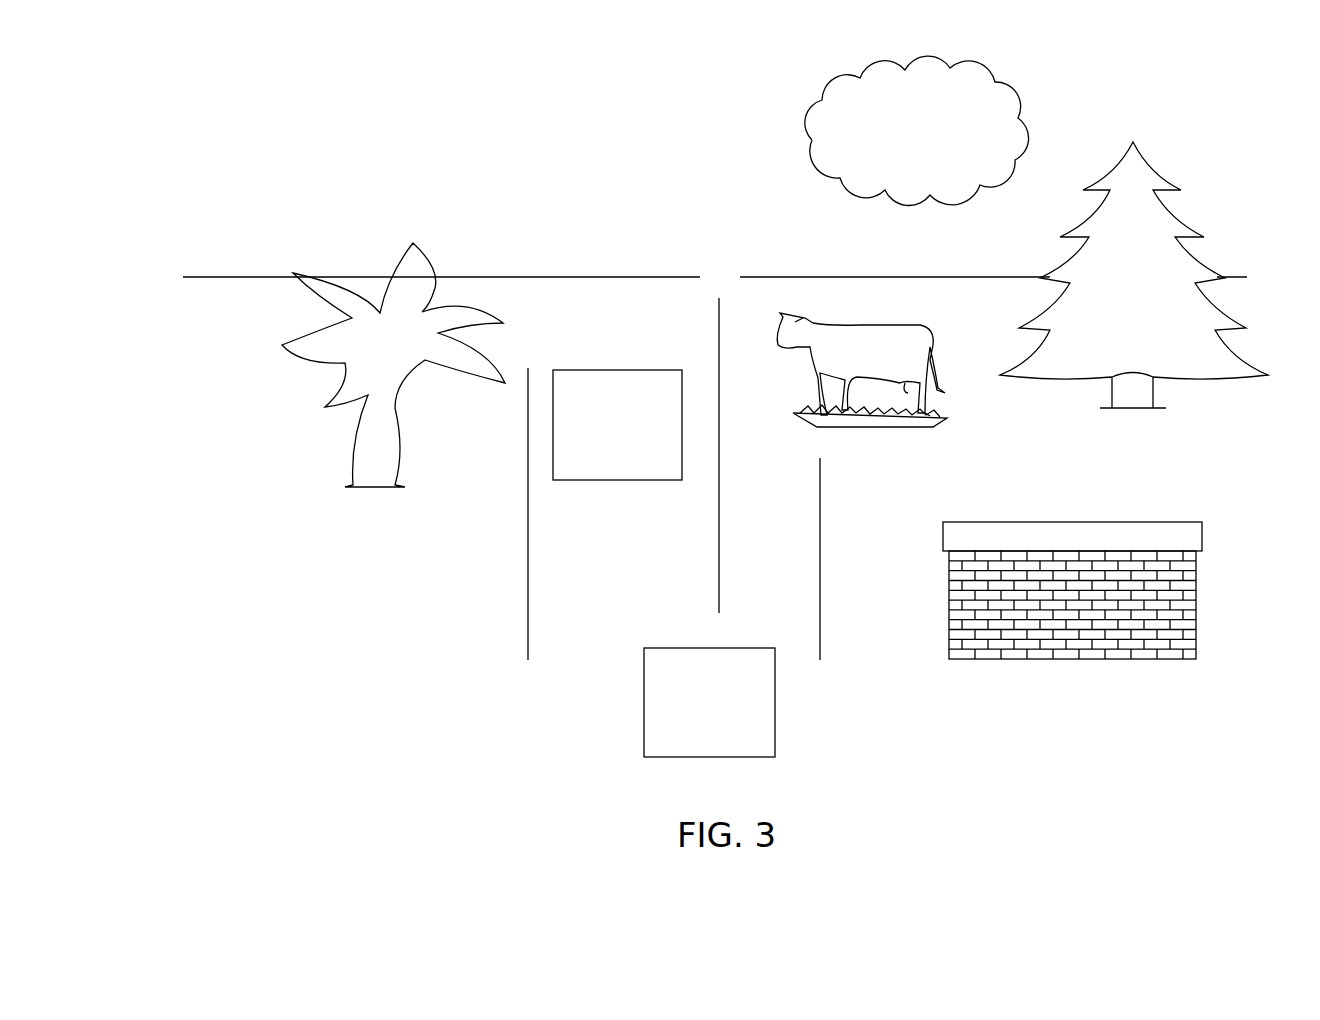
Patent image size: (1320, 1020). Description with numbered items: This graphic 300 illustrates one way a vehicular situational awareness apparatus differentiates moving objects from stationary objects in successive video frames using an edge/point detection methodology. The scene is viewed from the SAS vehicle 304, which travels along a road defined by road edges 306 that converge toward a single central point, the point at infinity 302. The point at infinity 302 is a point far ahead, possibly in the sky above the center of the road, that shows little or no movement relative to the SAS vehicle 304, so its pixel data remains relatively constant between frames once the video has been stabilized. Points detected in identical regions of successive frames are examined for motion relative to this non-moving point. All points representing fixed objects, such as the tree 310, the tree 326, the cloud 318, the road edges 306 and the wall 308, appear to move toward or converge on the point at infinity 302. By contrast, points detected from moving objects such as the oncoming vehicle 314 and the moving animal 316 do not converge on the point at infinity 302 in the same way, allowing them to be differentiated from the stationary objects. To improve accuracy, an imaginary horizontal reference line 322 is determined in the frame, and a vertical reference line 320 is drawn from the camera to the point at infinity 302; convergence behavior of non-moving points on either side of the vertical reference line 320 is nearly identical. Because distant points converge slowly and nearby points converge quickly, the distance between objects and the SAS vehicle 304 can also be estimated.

The scene 300 is at (291, 124).
The point at infinity 302 is at (710, 262).
The SAS vehicle 304 is at (687, 742).
The road edges 306 is at (528, 548).
The wall 308 is at (1080, 522).
The tree 310 is at (412, 346).
The oncoming vehicle 314 is at (636, 462).
The moving animal 316 is at (887, 364).
The cloud 318 is at (938, 138).
The vertical reference line 320 is at (719, 568).
The horizontal reference line 322 is at (229, 277).
The tree 326 is at (1114, 303).